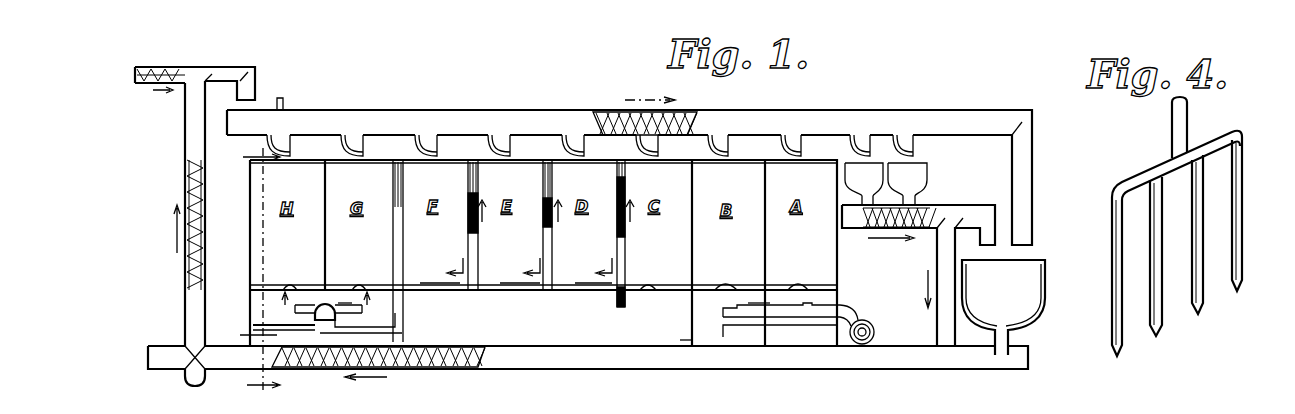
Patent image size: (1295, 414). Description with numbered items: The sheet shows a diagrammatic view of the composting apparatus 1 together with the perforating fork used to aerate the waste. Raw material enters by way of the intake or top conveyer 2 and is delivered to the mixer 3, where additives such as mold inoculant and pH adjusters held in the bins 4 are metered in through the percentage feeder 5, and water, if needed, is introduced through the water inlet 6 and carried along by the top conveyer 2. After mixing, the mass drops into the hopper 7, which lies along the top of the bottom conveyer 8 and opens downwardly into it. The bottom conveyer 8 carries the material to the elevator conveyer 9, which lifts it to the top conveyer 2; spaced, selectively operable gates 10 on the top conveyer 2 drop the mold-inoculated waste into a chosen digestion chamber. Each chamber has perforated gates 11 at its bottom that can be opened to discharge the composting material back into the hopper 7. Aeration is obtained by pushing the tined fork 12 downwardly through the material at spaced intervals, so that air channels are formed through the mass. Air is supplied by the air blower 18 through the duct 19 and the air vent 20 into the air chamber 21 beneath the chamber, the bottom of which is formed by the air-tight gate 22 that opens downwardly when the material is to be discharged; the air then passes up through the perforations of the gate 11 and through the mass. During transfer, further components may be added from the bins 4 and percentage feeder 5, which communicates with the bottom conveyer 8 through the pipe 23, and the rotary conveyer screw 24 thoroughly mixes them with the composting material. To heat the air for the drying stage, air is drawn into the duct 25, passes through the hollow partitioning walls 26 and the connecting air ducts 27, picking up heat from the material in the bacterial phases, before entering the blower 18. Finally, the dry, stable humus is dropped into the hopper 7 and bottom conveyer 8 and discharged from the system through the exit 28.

In FIG. 1, the inlet pipe 1 is at (217, 70).
In FIG. 1, the intake conveyer / top conveyer 2 is at (576, 122).
In FIG. 1, the mixer 3 is at (1032, 298).
In FIG. 1, the bins 4 is at (866, 178).
In FIG. 1, the percentage feeder 5 is at (952, 200).
In FIG. 1, the inlet 6 is at (283, 97).
In FIG. 1, the hopper 7 is at (460, 336).
In FIG. 1, the bottom conveyer 8 is at (607, 352).
In FIG. 1, the elevator conveyer 9 is at (185, 305).
In FIG. 1, the gates 10 is at (490, 155).
In FIG. 1, the perforated gates 11 is at (288, 282).
In FIG. 4, the tined fork 12 is at (1158, 138).
In FIG. 1, the air blower 18 is at (324, 303).
In FIG. 1, the duct 19 is at (553, 294).
In FIG. 1, the air vent 20 is at (295, 308).
In FIG. 1, the air chamber 21 is at (253, 307).
In FIG. 1, the air-tight gate 22 is at (290, 323).
In FIG. 1, the pipe 23 is at (944, 331).
In FIG. 1, the rotary conveyer screw 24 is at (455, 347).
In FIG. 1, the duct 25 is at (617, 300).
In FIG. 1, the hollow partitioning walls 26 is at (403, 210).
In FIG. 1, the connecting air ducts 27 is at (425, 278).
In FIG. 1, the exit 28 is at (162, 360).